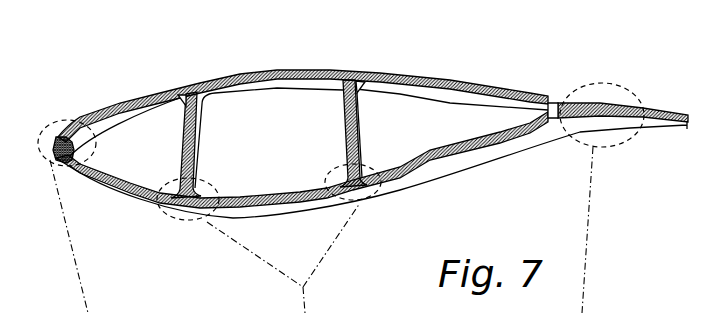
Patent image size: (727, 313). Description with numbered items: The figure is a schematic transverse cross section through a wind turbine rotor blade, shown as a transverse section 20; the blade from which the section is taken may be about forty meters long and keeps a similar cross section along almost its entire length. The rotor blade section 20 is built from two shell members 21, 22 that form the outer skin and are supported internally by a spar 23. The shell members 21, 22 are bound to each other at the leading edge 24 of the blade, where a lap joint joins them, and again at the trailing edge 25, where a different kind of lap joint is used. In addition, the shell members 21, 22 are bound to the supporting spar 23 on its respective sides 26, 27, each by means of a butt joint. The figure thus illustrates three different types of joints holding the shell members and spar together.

The transverse section 20 is at (278, 225).
The shell member 21 is at (482, 91).
The shell member 22 is at (478, 151).
The spar 23 is at (176, 139).
The leading edge 24 is at (93, 141).
The trailing edge 25 is at (683, 127).
The side of the spar 26 is at (276, 68).
The side of the spar 27 is at (268, 196).